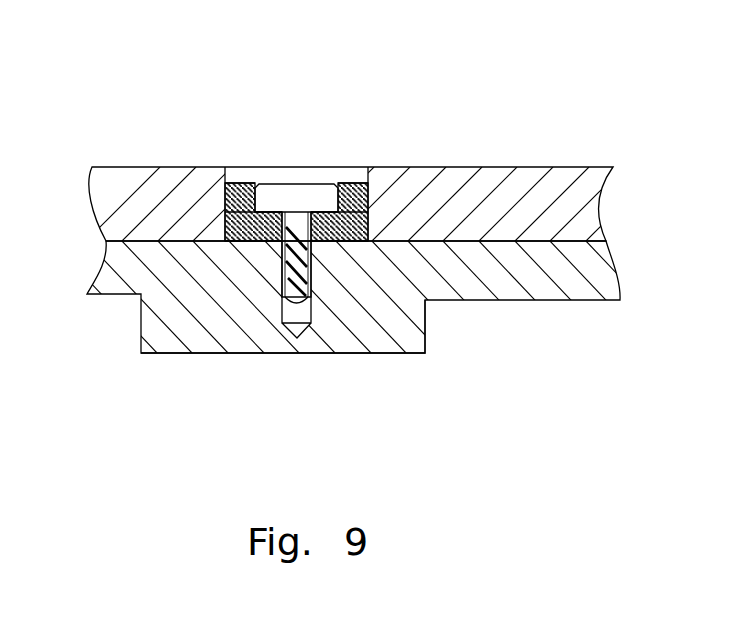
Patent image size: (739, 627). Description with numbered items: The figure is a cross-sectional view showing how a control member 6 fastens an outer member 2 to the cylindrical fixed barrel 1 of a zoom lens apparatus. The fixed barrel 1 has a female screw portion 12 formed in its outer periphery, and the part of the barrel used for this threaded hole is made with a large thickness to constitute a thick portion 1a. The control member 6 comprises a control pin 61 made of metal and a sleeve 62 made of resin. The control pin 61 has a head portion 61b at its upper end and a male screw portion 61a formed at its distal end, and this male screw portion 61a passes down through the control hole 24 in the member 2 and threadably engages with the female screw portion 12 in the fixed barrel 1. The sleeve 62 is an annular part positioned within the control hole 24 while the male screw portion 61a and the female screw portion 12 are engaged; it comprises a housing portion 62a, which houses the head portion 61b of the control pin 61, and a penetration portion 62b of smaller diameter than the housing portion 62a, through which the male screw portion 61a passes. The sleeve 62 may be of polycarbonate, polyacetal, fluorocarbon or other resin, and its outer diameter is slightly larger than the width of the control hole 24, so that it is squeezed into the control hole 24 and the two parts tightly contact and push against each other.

The fixed barrel 1 is at (353, 348).
The thick portion 1a is at (408, 347).
The upper plate 2 is at (373, 155).
The control member 6 is at (223, 232).
The female screw portion 12 is at (314, 327).
The control hole 24 is at (352, 176).
The control pin 61 is at (291, 232).
The male screw portion 61a is at (305, 313).
The head portion 61b is at (294, 193).
The sleeve 62 is at (221, 235).
The housing portion 62a is at (267, 188).
The penetration portion 62b is at (282, 241).